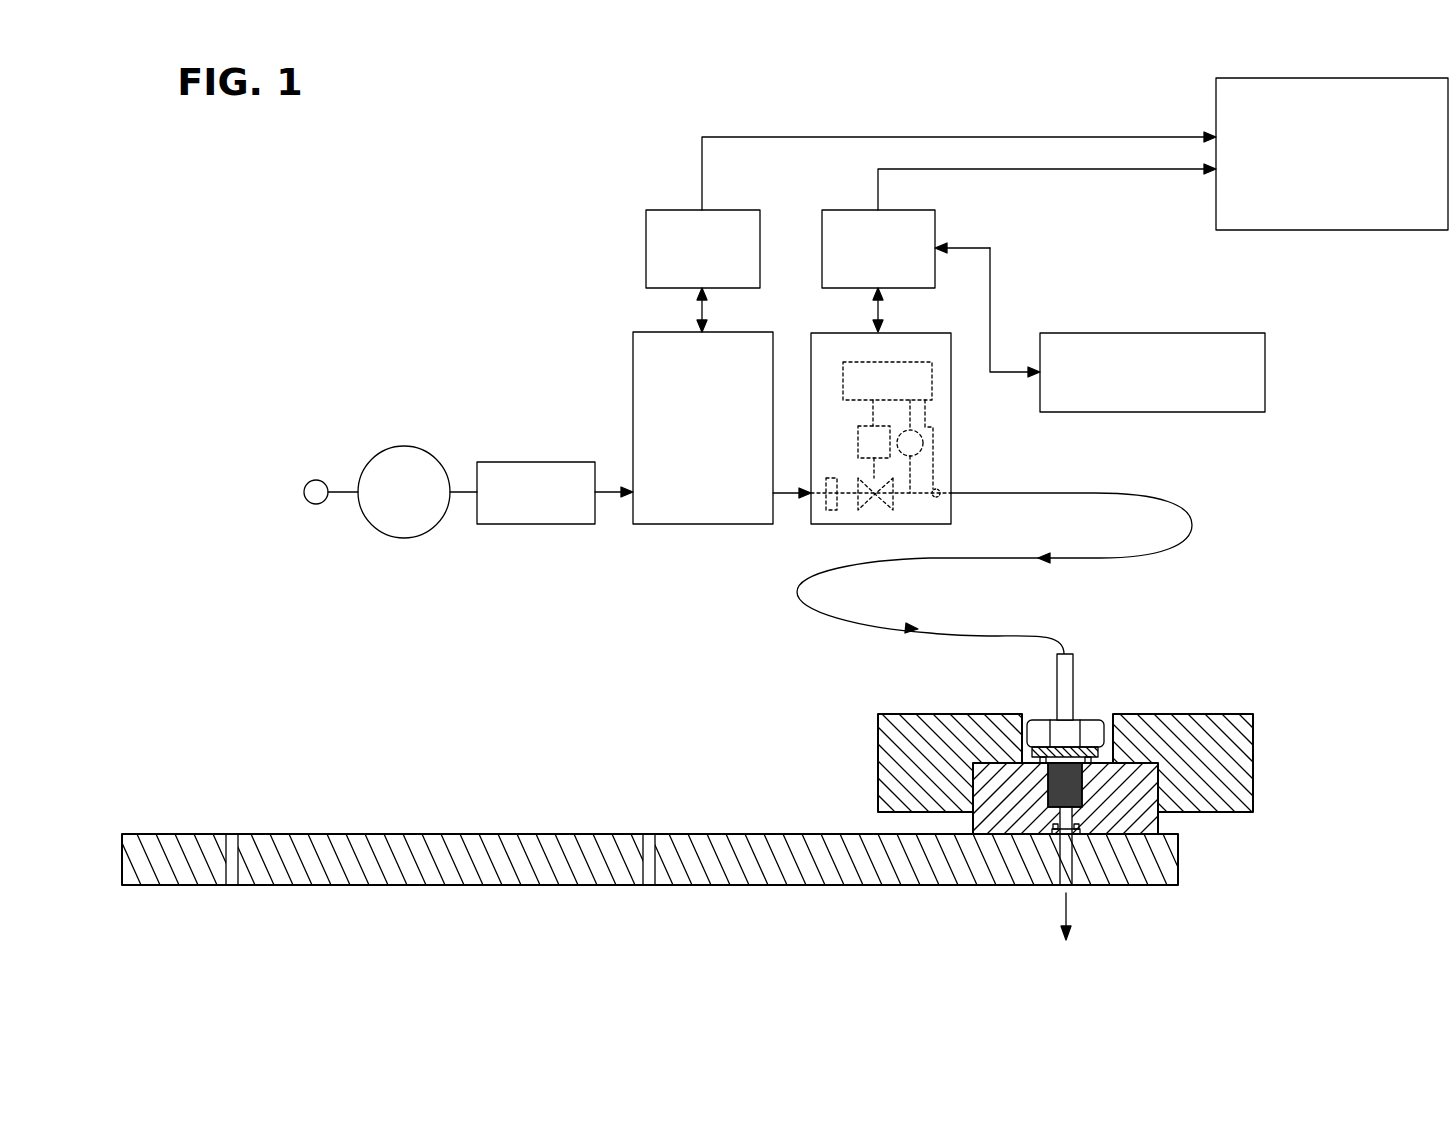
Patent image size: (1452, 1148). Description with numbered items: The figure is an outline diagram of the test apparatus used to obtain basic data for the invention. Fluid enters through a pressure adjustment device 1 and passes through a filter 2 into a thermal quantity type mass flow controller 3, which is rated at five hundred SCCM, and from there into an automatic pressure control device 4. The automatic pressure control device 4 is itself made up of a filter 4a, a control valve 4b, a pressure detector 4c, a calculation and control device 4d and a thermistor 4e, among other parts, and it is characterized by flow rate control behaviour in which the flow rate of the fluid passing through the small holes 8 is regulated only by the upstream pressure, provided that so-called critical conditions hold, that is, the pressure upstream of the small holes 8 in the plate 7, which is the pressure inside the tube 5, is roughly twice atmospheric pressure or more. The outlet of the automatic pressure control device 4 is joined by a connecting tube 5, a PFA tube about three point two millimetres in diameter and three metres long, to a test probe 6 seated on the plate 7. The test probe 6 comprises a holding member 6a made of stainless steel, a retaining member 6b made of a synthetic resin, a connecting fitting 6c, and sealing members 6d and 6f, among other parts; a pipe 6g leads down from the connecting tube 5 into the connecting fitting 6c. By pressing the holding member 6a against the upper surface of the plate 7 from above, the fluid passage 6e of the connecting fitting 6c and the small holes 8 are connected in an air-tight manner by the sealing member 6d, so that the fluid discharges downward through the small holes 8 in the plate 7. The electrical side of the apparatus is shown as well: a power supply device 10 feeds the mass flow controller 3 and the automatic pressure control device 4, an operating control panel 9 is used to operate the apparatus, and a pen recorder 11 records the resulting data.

The pressure adjustment device 1 is at (397, 538).
The filter 2 is at (527, 525).
The thermal quantity type mass flow controller 3 is at (697, 525).
The automatic pressure control device 4 is at (901, 450).
The filter 4a is at (826, 504).
The control valve 4b is at (878, 498).
The pressure detector 4c is at (923, 445).
The calculation and control device 4d is at (936, 388).
The thermistor 4e is at (940, 490).
The connecting tube 5 is at (1178, 506).
The test probe 6 is at (1061, 786).
The holding member 6a is at (1202, 777).
The retaining member 6b is at (1137, 790).
The connecting fitting 6c is at (1070, 740).
The sealing member 6d is at (1058, 830).
The fluid passage 6e is at (1053, 810).
The sealing member 6f is at (1048, 750).
The pipe 6g is at (1060, 676).
The plate 7 is at (580, 833).
The small holes 8 is at (1068, 866).
The operating control panel 9 is at (1150, 333).
The power supply device 10 is at (733, 210).
The pen recorder 11 is at (1340, 231).